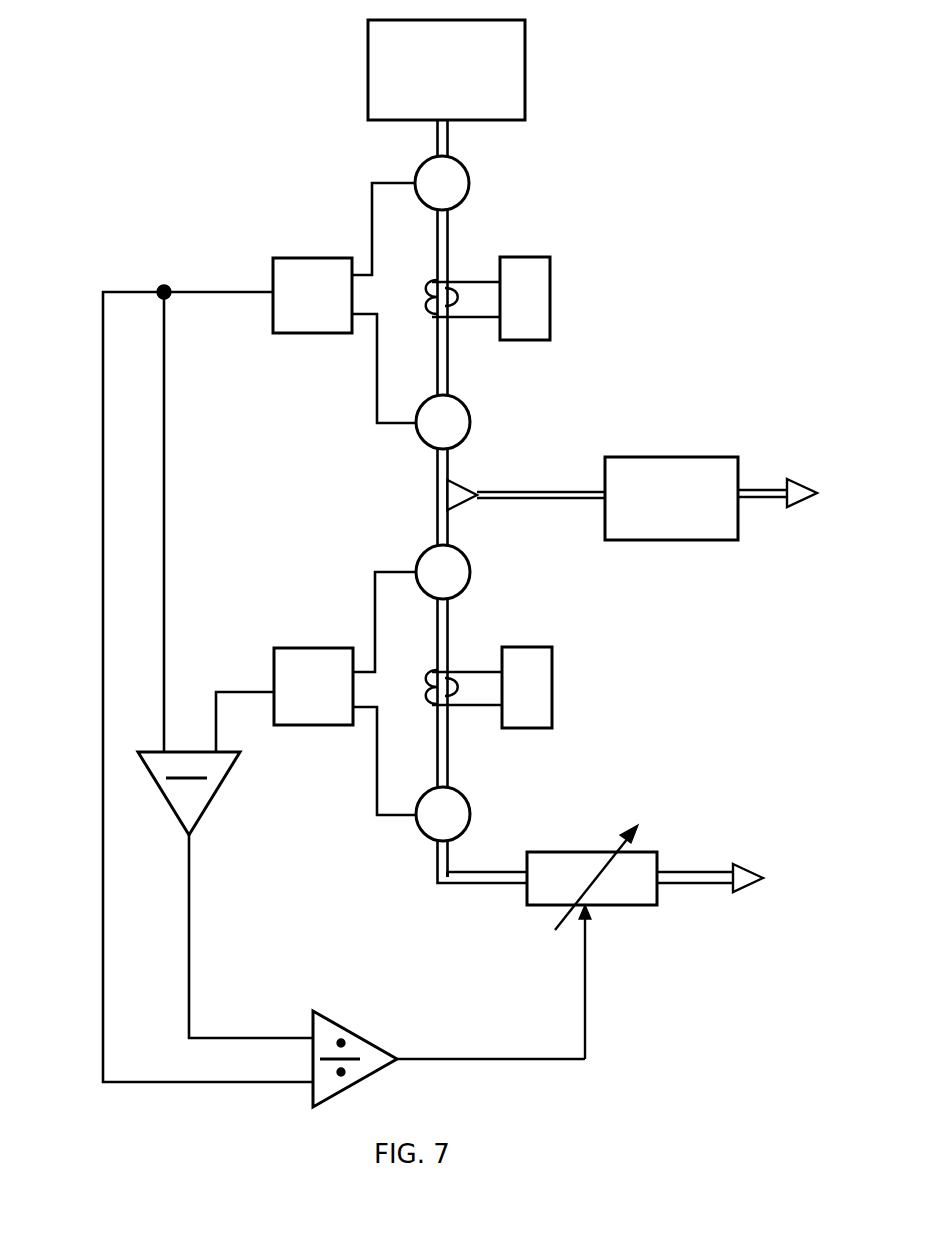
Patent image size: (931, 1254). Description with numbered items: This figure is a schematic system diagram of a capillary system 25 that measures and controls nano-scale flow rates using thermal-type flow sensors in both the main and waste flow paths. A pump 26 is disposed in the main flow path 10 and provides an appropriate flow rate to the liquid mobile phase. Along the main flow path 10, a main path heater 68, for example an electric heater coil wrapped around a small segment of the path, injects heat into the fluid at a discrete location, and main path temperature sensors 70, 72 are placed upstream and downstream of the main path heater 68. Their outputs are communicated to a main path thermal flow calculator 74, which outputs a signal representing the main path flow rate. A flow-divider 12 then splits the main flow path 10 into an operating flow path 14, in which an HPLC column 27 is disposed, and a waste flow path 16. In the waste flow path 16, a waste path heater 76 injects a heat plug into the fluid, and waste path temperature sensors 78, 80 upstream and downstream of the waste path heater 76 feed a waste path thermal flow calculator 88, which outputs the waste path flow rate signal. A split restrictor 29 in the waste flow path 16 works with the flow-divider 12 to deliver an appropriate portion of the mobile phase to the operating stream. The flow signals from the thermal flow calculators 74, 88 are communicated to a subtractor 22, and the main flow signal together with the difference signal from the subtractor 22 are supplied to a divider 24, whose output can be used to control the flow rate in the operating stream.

The capillary system 25 is at (220, 208).
The pump 26 is at (527, 82).
The main flow path 10 is at (436, 145).
The main path temperature sensor 70 is at (468, 172).
The main path temperature sensor 72 is at (472, 418).
The waste path temperature sensor 78 is at (472, 564).
The waste path temperature sensor 80 is at (470, 810).
The main path heater 68 is at (552, 302).
The waste path heater 76 is at (553, 698).
The main path thermal flow calculator 74 is at (312, 335).
The waste path thermal flow calculator 88 is at (313, 646).
The flow-divider 12 is at (458, 487).
The operating flow path 14 is at (530, 487).
The HPLC column 27 is at (720, 457).
The waste flow path 16 is at (495, 890).
The split restrictor 29 is at (625, 907).
The subtractor 22 is at (225, 778).
The divider 24 is at (360, 1034).